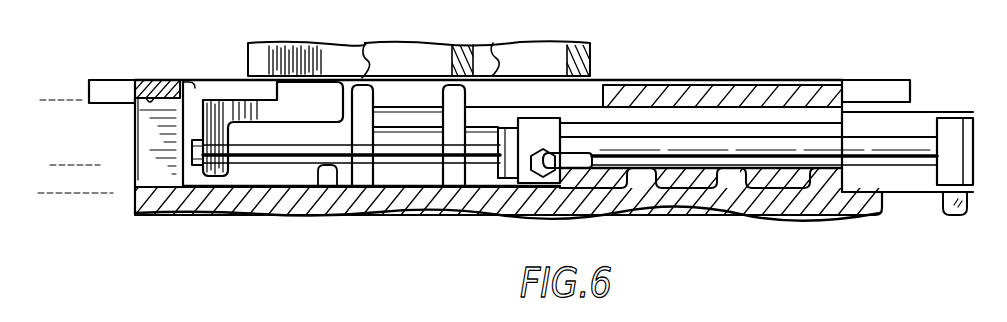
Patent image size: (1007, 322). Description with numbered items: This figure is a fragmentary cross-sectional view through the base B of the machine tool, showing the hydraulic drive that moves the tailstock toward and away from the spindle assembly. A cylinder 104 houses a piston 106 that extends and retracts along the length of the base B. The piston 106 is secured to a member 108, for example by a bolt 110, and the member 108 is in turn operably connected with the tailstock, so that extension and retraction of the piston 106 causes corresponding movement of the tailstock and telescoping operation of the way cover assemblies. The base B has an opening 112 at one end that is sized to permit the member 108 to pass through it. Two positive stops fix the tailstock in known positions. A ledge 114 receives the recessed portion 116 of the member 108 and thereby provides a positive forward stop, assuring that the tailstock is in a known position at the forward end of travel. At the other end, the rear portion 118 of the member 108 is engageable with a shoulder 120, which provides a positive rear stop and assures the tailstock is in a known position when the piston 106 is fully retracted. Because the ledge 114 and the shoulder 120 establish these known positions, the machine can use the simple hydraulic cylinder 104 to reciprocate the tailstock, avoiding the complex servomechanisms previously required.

The cylinder 104 is at (693, 148).
The piston 106 is at (317, 153).
The member 108 is at (226, 108).
The bolt 110 is at (197, 166).
The opening 112 is at (148, 80).
The ledge 114 is at (184, 80).
The recessed portion 116 is at (271, 86).
The rear portion 118 is at (343, 88).
The shoulder 120 is at (608, 88).
The base B is at (785, 200).